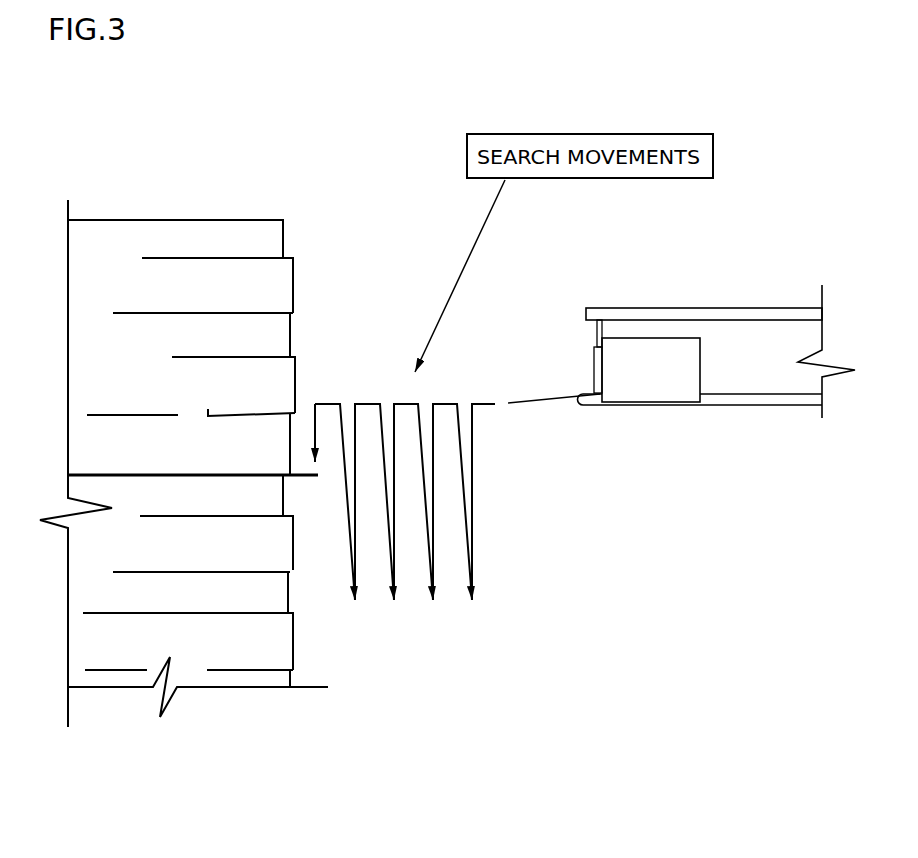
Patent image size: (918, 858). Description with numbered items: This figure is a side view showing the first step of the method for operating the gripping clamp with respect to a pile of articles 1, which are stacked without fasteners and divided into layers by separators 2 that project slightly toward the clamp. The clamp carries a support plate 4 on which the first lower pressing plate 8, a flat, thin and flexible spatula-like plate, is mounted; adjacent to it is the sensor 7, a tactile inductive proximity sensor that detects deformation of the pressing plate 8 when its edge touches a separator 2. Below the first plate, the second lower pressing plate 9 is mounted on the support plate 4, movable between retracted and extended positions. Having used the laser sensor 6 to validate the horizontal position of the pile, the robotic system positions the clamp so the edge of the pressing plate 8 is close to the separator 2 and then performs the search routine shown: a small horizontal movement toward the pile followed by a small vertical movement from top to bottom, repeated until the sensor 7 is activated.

The articles 1 is at (212, 208).
The separator 2 is at (313, 479).
The support plate 4 is at (665, 306).
The laser sensor 6 is at (653, 378).
The sensor 7 is at (595, 369).
The first lower pressing plate 8 is at (534, 411).
The second lower pressing plate 9 is at (606, 414).